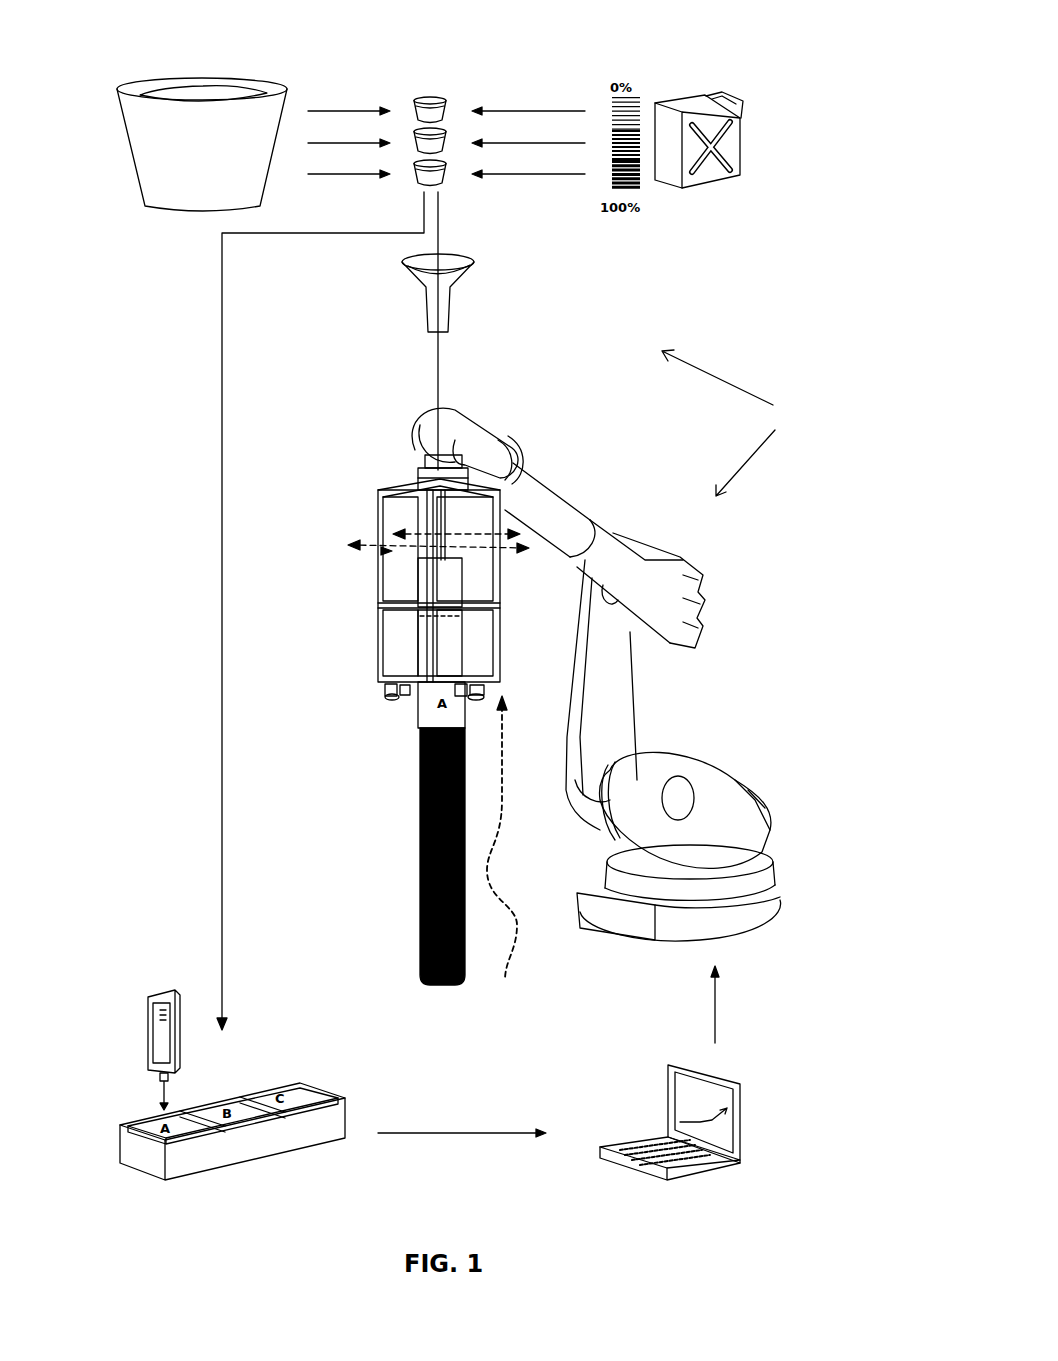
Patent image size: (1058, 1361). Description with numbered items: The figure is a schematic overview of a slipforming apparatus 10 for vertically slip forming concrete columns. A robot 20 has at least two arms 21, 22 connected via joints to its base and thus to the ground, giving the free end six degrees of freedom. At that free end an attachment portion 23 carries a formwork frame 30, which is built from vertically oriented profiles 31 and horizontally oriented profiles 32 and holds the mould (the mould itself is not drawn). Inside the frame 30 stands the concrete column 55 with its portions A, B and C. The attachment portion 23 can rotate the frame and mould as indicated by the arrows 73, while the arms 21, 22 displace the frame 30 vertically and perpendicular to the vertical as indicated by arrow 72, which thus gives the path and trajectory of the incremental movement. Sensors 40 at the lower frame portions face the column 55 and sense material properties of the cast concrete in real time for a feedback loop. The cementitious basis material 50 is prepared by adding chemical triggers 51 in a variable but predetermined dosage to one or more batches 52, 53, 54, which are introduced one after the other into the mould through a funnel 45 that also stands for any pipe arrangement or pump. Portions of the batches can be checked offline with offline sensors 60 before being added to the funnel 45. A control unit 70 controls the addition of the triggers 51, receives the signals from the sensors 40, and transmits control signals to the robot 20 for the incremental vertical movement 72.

The slipforming apparatus 10 is at (735, 423).
The robot 20 is at (732, 823).
The robot arm 21 is at (612, 686).
The robot arm 22 is at (562, 500).
The attachment portion 23 is at (425, 468).
The formwork frame 30 is at (370, 510).
The vertically oriented profiles 31 is at (378, 571).
The horizontally oriented profiles 32 is at (400, 672).
The sensors 40 is at (400, 690).
The funnel 45 is at (450, 272).
The cementitious basis material 50 is at (250, 110).
The chemical triggers 51 is at (680, 100).
The batch 52 is at (432, 96).
The batch 53 is at (446, 128).
The batch 54 is at (447, 172).
The concrete column 55 is at (420, 758).
The offline sensors 60 is at (122, 1034).
The control unit 70 is at (745, 1122).
The vertical movement arrow 72 is at (503, 800).
The rotation arrows 73 is at (505, 550).